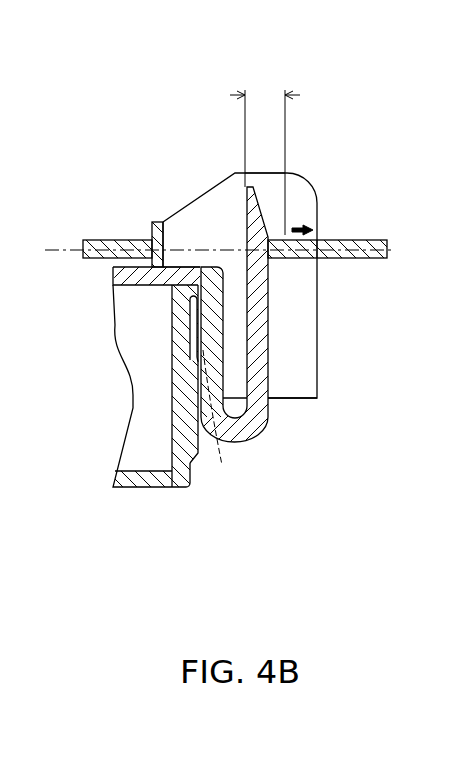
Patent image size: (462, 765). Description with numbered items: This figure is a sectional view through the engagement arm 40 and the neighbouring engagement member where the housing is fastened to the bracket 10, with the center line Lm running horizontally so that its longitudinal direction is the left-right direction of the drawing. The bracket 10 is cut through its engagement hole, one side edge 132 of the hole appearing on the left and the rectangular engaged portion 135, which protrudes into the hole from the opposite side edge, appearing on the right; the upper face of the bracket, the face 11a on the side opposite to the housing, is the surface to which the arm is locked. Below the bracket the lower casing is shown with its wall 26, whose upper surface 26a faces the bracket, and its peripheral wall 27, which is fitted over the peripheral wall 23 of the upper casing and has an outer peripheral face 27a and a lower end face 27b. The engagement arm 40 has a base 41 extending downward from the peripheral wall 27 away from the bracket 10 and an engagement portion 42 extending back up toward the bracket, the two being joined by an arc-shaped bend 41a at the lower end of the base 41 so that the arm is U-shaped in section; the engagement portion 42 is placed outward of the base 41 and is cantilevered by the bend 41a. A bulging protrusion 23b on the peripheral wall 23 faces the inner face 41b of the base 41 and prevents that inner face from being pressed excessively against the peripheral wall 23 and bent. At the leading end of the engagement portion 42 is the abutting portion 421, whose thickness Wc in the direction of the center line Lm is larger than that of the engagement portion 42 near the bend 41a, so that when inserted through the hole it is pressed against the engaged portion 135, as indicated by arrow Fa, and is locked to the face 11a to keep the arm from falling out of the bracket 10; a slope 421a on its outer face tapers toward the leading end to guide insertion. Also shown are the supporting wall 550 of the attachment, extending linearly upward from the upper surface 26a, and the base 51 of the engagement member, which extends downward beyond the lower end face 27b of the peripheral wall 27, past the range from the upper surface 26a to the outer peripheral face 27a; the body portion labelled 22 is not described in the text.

The bracket 10 is at (214, 229).
The face of the bracket 11a is at (360, 240).
The side edge 132 is at (143, 238).
The engaged portion 135 is at (305, 256).
The housing body 22 is at (150, 352).
The peripheral wall of the upper casing 23 is at (126, 386).
The bulging protrusion 23b is at (186, 422).
The wall 26 is at (149, 226).
The upper surface 26a is at (185, 267).
The peripheral wall 27 is at (150, 396).
The outer peripheral face 27a is at (189, 352).
The lower end face 27b is at (223, 423).
The engagement arm 40 is at (234, 281).
The base 41 is at (210, 362).
The bend 41a is at (236, 433).
The inner face 41b is at (200, 385).
The engagement portion 42 is at (257, 347).
The abutting portion 421 is at (260, 251).
The slope 421a is at (296, 190).
The base 51 is at (264, 175).
The supporting wall 550 is at (157, 222).
The width of contact portion Wc is at (265, 147).
The arrow Fa is at (302, 229).
The center line Lm is at (238, 251).